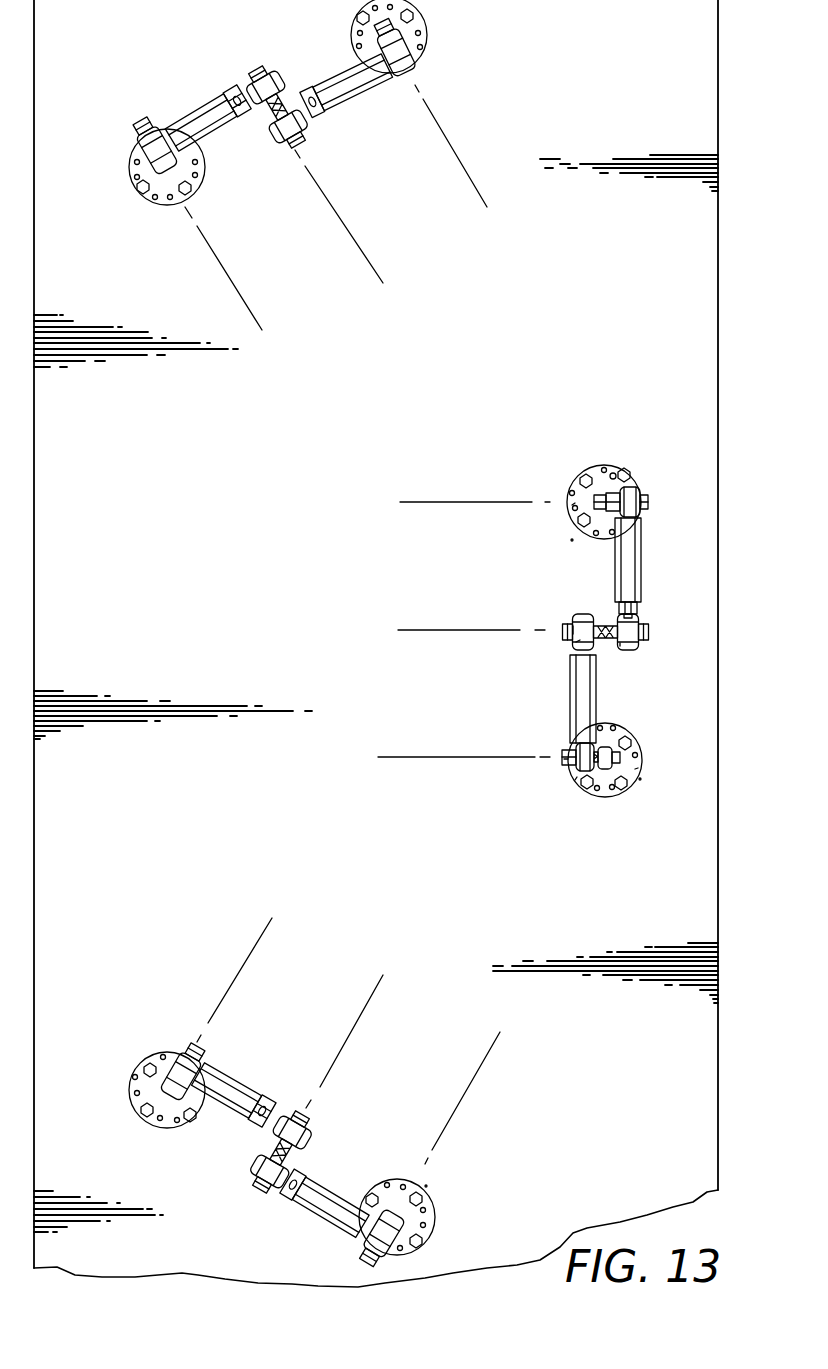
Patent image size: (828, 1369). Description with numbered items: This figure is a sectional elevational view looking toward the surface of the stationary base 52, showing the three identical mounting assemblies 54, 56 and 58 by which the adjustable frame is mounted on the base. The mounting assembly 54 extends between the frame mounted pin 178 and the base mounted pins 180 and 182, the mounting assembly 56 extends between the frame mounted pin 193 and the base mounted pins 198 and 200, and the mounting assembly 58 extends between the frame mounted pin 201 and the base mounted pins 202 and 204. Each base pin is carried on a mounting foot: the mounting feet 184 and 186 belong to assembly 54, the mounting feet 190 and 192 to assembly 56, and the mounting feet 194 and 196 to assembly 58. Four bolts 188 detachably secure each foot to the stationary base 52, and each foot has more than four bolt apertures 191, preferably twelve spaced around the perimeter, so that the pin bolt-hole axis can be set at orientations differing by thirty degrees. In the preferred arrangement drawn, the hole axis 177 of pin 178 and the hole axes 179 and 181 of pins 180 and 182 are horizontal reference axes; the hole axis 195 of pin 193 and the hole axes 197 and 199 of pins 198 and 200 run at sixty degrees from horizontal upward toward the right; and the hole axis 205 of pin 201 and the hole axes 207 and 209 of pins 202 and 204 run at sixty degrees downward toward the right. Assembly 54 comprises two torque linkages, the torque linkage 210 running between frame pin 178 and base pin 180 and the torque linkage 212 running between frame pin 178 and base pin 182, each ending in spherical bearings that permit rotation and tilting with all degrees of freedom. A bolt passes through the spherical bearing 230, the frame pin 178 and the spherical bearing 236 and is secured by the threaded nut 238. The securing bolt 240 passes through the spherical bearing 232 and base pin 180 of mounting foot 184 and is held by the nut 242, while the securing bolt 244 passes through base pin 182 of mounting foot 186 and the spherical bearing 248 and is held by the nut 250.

The stationary base 52 is at (302, 530).
The mounting assembly 54 is at (668, 590).
The mounting assembly 56 is at (386, 1124).
The mounting assembly 58 is at (213, 84).
The hole axis 177 is at (450, 628).
The frame mounted pin 178 is at (620, 648).
The hole axis 179 is at (427, 500).
The base mounted pin 180 is at (613, 470).
The hole axis 181 is at (460, 756).
The base mounted pin 182 is at (615, 798).
The mounting foot 184 is at (579, 460).
The mounting foot 186 is at (608, 728).
The bolts 188 is at (572, 540).
The mounting foot 190 is at (134, 1066).
The bolt apertures 191 is at (642, 780).
The mounting foot 192 is at (360, 1236).
The frame mounted pin 193 is at (270, 1150).
The mounting foot 194 is at (443, 51).
The hole axis 195 is at (364, 1006).
The mounting foot 196 is at (167, 207).
The hole axis 197 is at (251, 952).
The base mounted pin 198 is at (130, 1084).
The hole axis 199 is at (482, 1075).
The base mounted pin 200 is at (439, 1224).
The frame mounted pin 201 is at (265, 124).
The base mounted pin 202 is at (428, 18).
The base mounted pin 204 is at (132, 170).
The hole axis 205 is at (348, 224).
The hole axis 207 is at (455, 138).
The hole axis 209 is at (233, 276).
The torque linkage 210 is at (655, 540).
The torque linkage 212 is at (552, 690).
The spherical bearing 230 is at (655, 633).
The spherical bearing 232 is at (652, 492).
The spherical bearing 236 is at (572, 643).
The threaded nut 238 is at (573, 624).
The securing bolt 240 is at (648, 532).
The nut 242 is at (568, 508).
The securing bolt 244 is at (640, 768).
The spherical bearing 248 is at (574, 782).
The nut 250 is at (562, 760).